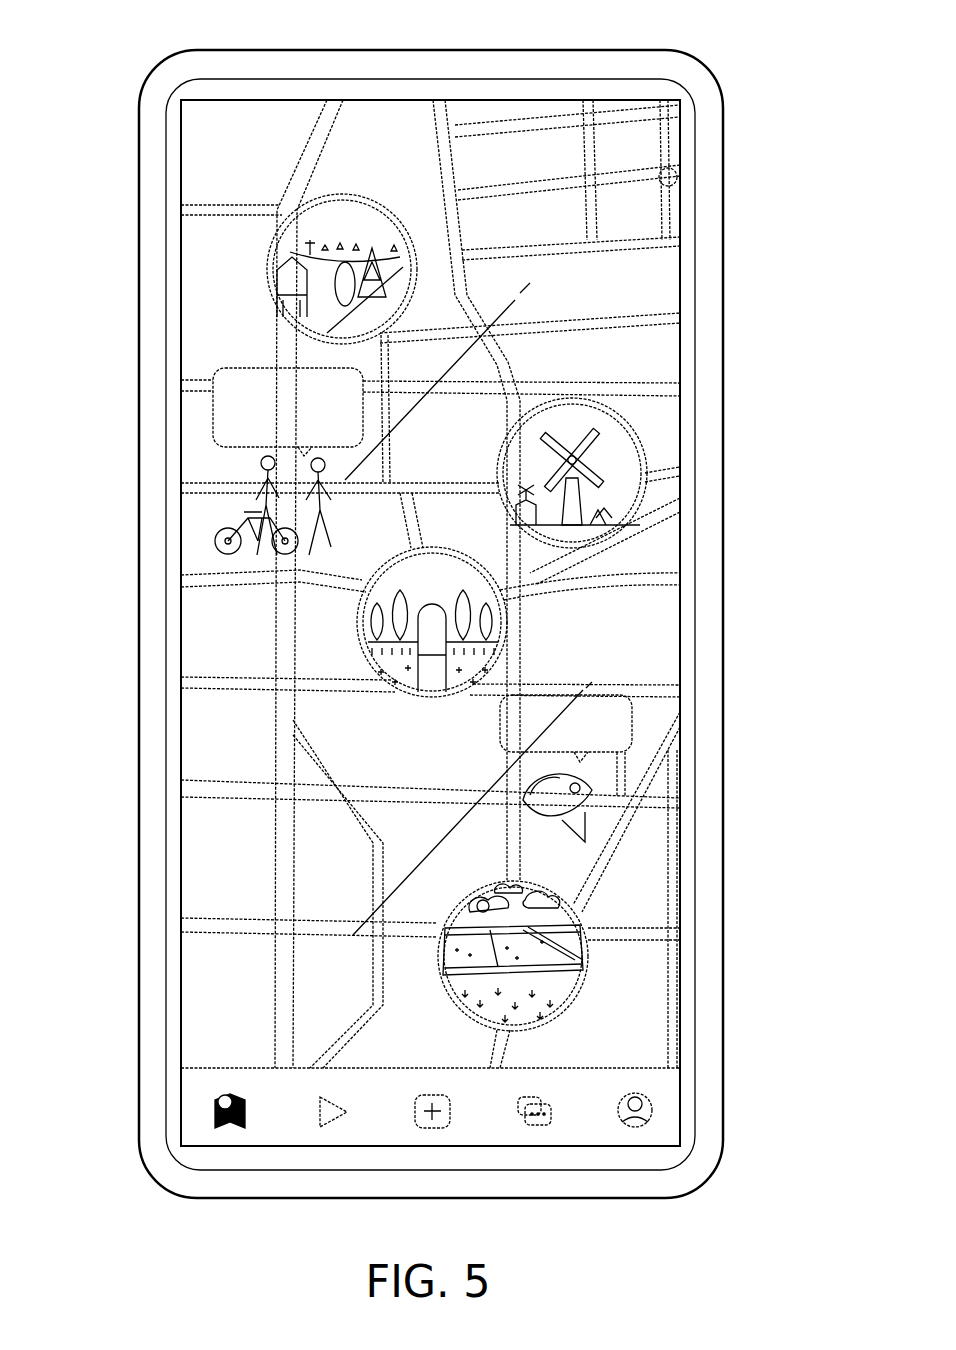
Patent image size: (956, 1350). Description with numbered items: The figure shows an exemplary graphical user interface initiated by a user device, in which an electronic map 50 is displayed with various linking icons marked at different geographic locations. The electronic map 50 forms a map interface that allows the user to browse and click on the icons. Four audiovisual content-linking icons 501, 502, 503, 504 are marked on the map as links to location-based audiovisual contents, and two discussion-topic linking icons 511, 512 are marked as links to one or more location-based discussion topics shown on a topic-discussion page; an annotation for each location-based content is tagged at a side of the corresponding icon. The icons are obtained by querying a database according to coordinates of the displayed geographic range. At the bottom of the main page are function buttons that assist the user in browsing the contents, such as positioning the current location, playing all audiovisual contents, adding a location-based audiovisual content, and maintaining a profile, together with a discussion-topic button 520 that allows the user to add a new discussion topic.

The electronic map 50 is at (398, 98).
The audiovisual content-linking icon 501 is at (268, 267).
The audiovisual content-linking icon 502 is at (645, 442).
The audiovisual content-linking icon 503 is at (432, 697).
The audiovisual content-linking icon 504 is at (588, 985).
The discussion-topic linking icon 511 is at (203, 412).
The discussion-topic linking icon 512 is at (650, 728).
The discussion-topic button 520 is at (538, 1128).